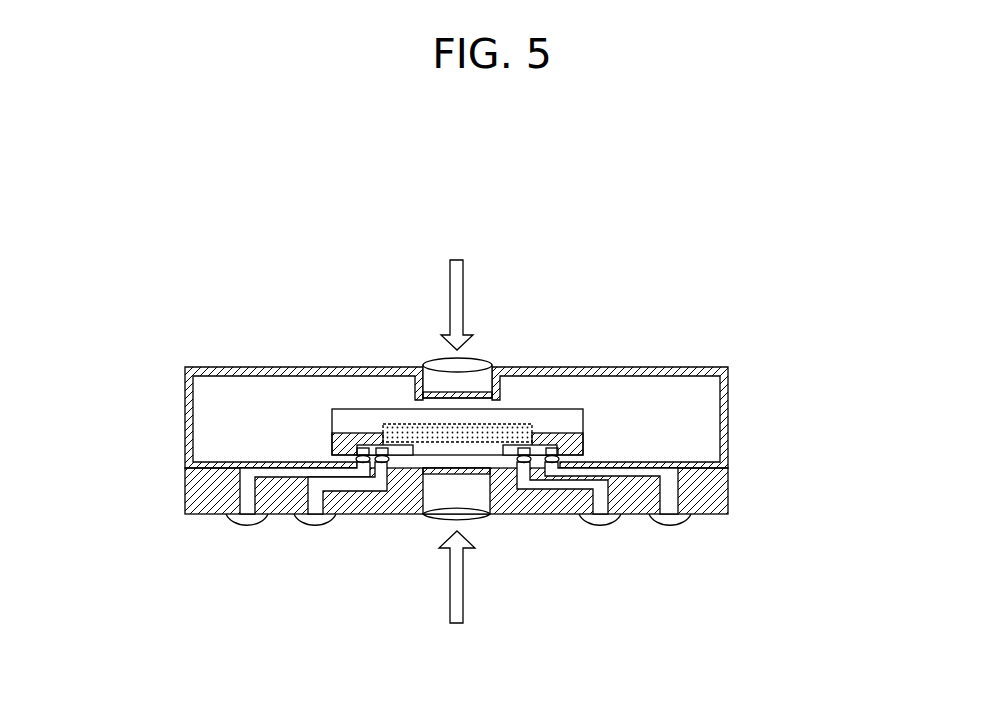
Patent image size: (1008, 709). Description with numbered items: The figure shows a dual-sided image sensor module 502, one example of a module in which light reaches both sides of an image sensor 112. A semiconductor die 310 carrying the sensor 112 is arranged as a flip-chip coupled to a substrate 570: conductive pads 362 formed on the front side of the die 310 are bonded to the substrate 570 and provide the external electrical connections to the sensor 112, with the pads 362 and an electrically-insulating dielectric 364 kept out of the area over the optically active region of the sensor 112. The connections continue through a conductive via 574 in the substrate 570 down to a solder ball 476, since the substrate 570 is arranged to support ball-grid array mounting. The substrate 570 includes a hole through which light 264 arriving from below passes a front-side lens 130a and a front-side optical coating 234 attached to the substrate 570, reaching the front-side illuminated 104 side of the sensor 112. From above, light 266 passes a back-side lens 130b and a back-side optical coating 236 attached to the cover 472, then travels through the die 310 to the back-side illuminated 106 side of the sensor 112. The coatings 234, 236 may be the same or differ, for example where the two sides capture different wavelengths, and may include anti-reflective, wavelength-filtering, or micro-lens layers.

The dual-sided image sensor module 502 is at (482, 396).
The back-side illuminated 106 is at (675, 212).
The front-side illuminated 104 is at (680, 635).
The light 266 is at (494, 289).
The light 264 is at (493, 596).
The back-side optical coating 236 is at (414, 327).
The front-side optical coating 234 is at (411, 535).
The back-side lens 130b is at (495, 352).
The front-side lens 130a is at (495, 525).
The image sensor 112 is at (568, 364).
The semiconductor die 310 is at (360, 364).
The dielectric 364 is at (329, 408).
The cover 472 is at (517, 406).
The conductive pads 362 is at (515, 436).
The substrate 570 is at (537, 496).
The conductive via 574 is at (550, 544).
The solder ball 476 is at (424, 568).